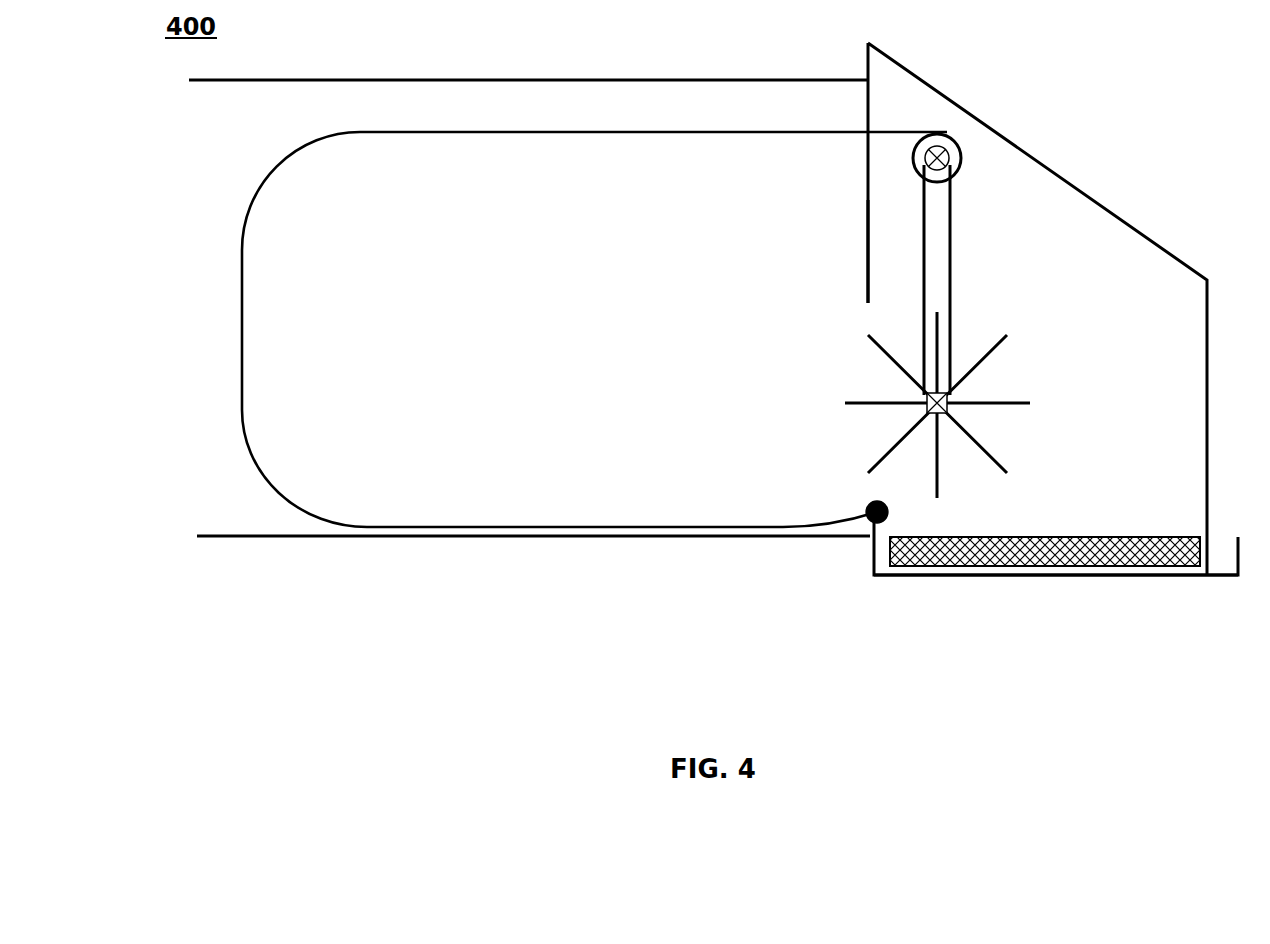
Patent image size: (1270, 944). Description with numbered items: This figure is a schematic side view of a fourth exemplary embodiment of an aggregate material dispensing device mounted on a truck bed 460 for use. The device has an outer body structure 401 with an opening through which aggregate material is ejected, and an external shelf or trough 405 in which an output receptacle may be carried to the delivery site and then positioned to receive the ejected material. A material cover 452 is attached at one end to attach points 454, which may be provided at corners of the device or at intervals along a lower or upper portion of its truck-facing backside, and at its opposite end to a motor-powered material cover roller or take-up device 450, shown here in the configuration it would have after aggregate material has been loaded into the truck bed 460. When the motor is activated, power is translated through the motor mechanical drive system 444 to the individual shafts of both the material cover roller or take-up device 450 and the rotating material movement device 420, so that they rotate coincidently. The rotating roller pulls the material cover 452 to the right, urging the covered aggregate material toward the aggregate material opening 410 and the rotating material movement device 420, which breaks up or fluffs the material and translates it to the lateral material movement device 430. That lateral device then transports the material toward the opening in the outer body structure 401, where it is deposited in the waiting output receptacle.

The outer body structure 401 is at (1207, 390).
The external shelf or trough 405 is at (1222, 576).
The aggregate material opening 410 is at (867, 318).
The rotating material movement device 420 is at (863, 403).
The lateral material movement device 430 is at (1045, 535).
The motor mechanical drive system 444 is at (950, 235).
The material cover roller or take-up device 450 is at (930, 157).
The material cover 452 is at (242, 343).
The attach points 454 is at (867, 507).
The truck bed 460 is at (558, 536).